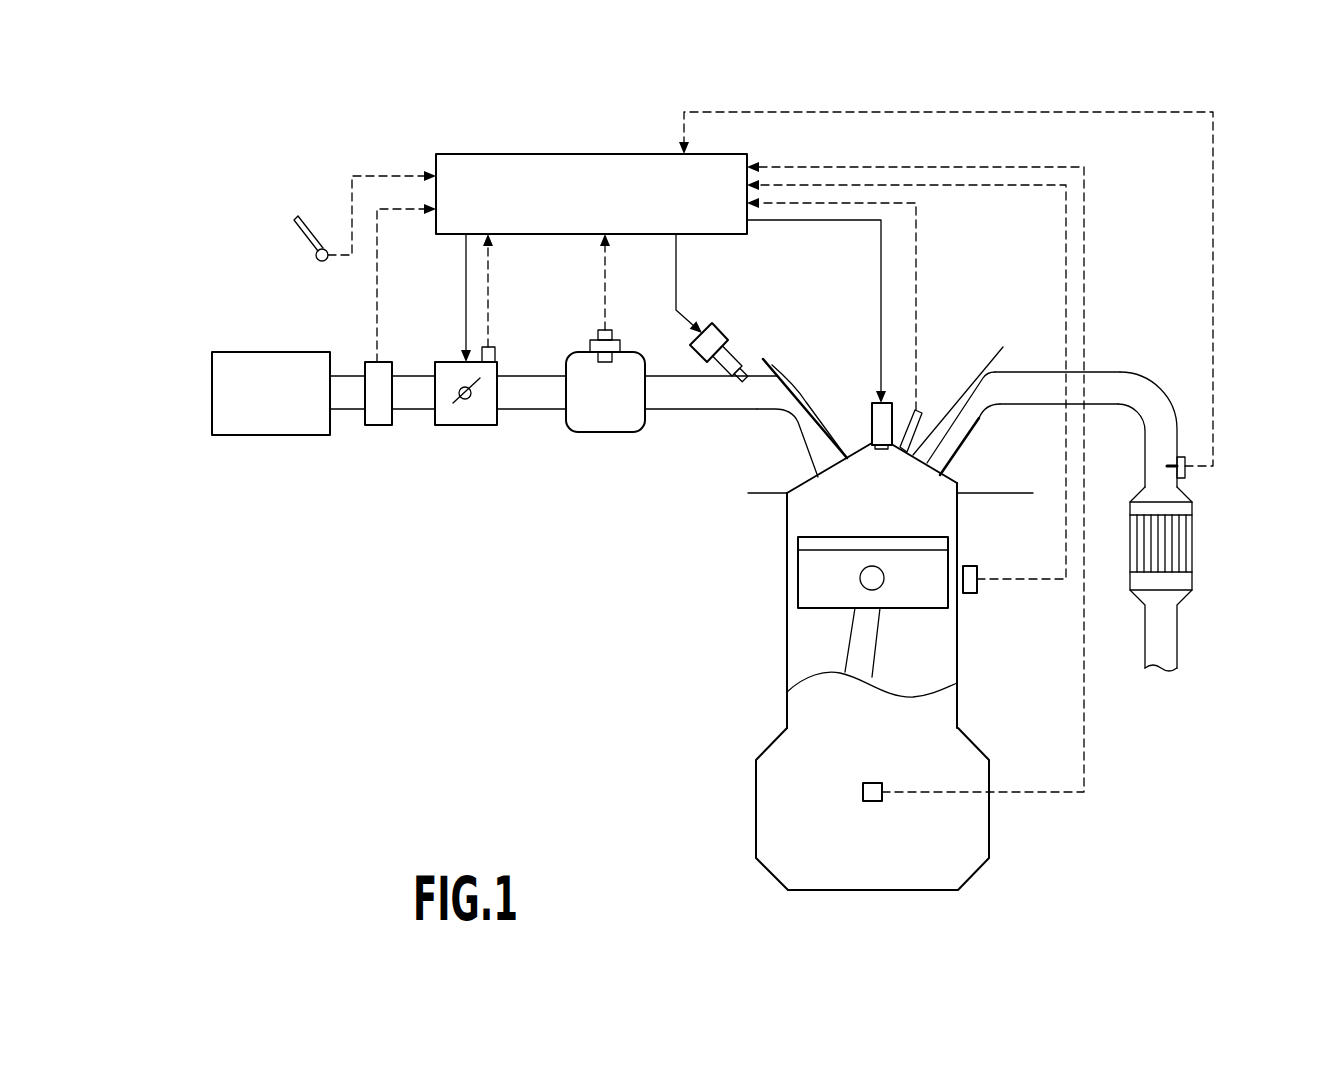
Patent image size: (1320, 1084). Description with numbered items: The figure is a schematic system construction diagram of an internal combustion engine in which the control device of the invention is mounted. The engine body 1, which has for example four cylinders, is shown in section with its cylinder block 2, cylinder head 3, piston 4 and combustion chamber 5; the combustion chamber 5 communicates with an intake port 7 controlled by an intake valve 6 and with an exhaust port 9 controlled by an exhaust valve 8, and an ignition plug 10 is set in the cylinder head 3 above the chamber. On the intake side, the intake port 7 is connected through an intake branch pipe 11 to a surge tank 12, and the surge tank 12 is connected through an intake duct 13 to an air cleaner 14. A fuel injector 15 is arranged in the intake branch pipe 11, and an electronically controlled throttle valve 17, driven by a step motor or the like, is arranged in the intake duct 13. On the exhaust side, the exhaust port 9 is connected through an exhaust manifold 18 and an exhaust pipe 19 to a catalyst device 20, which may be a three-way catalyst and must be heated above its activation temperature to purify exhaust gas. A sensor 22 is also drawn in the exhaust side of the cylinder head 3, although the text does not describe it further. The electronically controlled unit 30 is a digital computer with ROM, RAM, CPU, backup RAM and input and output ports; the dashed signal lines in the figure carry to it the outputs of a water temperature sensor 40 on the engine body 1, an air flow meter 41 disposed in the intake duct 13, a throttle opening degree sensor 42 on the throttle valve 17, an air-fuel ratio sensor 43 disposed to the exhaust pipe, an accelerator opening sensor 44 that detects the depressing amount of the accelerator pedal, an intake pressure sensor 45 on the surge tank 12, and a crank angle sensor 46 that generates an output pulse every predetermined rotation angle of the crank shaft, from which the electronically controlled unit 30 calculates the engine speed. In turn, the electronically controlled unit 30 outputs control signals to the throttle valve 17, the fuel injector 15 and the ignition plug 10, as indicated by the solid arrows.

The engine body 1 is at (700, 658).
The cylinder block 2 is at (790, 712).
The cylinder head 3 is at (757, 471).
The piston 4 is at (800, 578).
The combustion chamber 5 is at (889, 528).
The intake valve 6 is at (766, 360).
The intake port 7 is at (806, 402).
The exhaust valve 8 is at (1000, 350).
The exhaust port 9 is at (985, 418).
The ignition plug 10 is at (872, 416).
The intake branch pipe 11 is at (700, 410).
The surge tank 12 is at (608, 433).
The intake duct 13 is at (539, 410).
The air cleaner 14 is at (275, 437).
The fuel injector 15 is at (714, 330).
The throttle valve 17 is at (468, 427).
The exhaust manifold 18 is at (1033, 372).
The exhaust pipe 19 is at (1148, 380).
The catalyst device 20 is at (1190, 548).
The air-fuel ratio sensor 22 is at (916, 410).
The electronically controlled unit 30 is at (607, 154).
The water temperature sensor 40 is at (978, 592).
The air flow meter 41 is at (380, 427).
The throttle opening degree sensor 42 is at (497, 348).
The air-fuel ratio sensor 43 is at (1188, 470).
The accelerator opening sensor 44 is at (318, 262).
The intake pressure sensor 45 is at (612, 332).
The crank angle sensor 46 is at (872, 802).